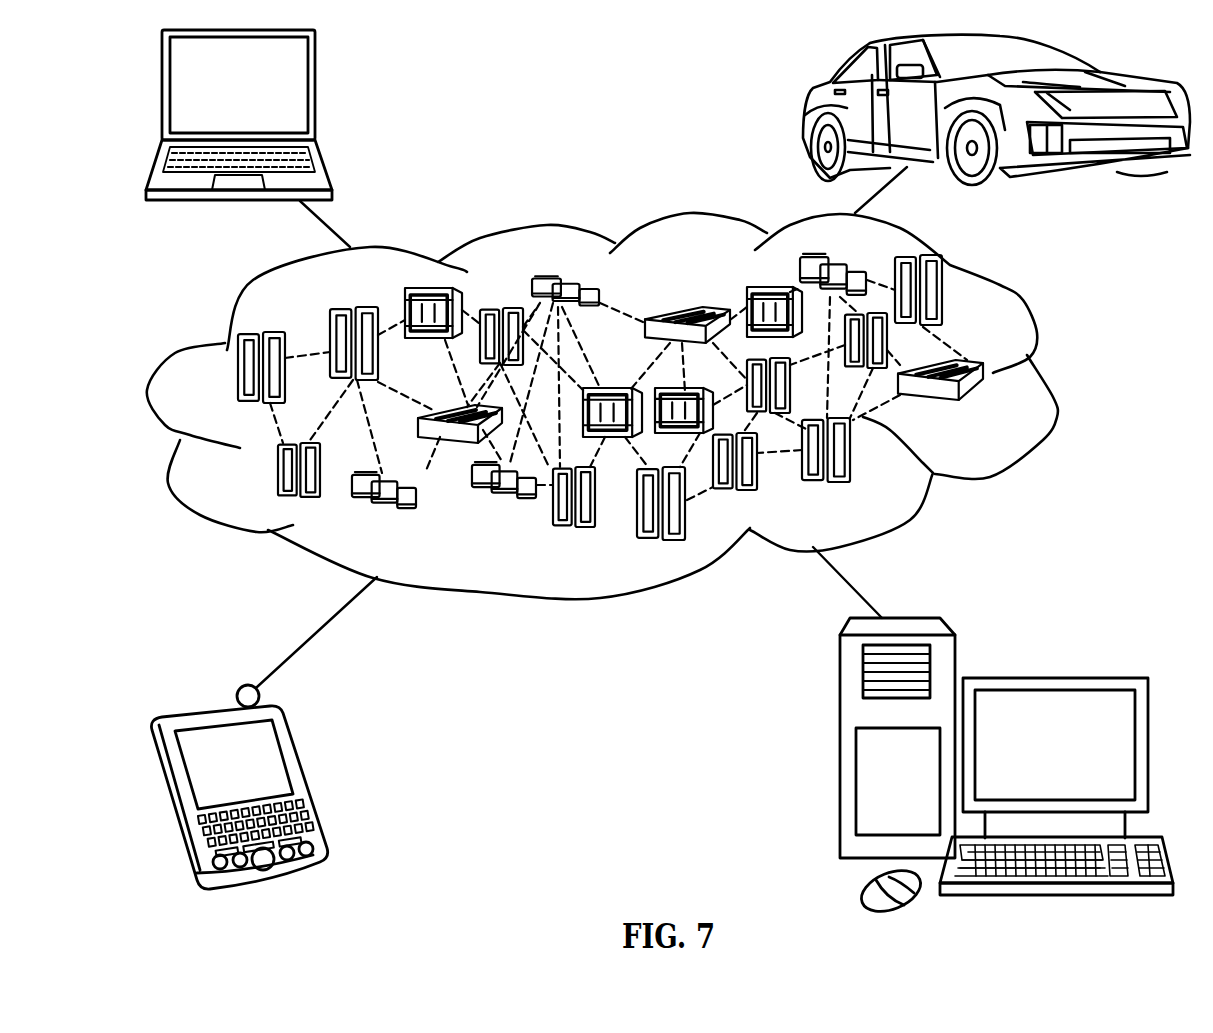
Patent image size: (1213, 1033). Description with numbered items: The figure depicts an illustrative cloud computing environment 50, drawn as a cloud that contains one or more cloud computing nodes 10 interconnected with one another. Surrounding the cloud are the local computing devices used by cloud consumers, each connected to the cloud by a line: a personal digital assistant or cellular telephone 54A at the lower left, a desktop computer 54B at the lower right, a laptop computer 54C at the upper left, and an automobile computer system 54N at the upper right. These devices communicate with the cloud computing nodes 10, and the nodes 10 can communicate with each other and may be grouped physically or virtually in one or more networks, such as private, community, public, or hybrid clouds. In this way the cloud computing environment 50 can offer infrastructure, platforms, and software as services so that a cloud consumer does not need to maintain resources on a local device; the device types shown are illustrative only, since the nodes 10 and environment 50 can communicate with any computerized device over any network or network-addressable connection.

The cloud computing node 10 is at (987, 411).
The cloud computing environment 50 is at (1053, 377).
The personal digital assistant or cellular telephone 54A is at (303, 778).
The desktop computer 54B is at (1052, 678).
The laptop computer 54C is at (315, 93).
The automobile computer system 54N is at (810, 108).